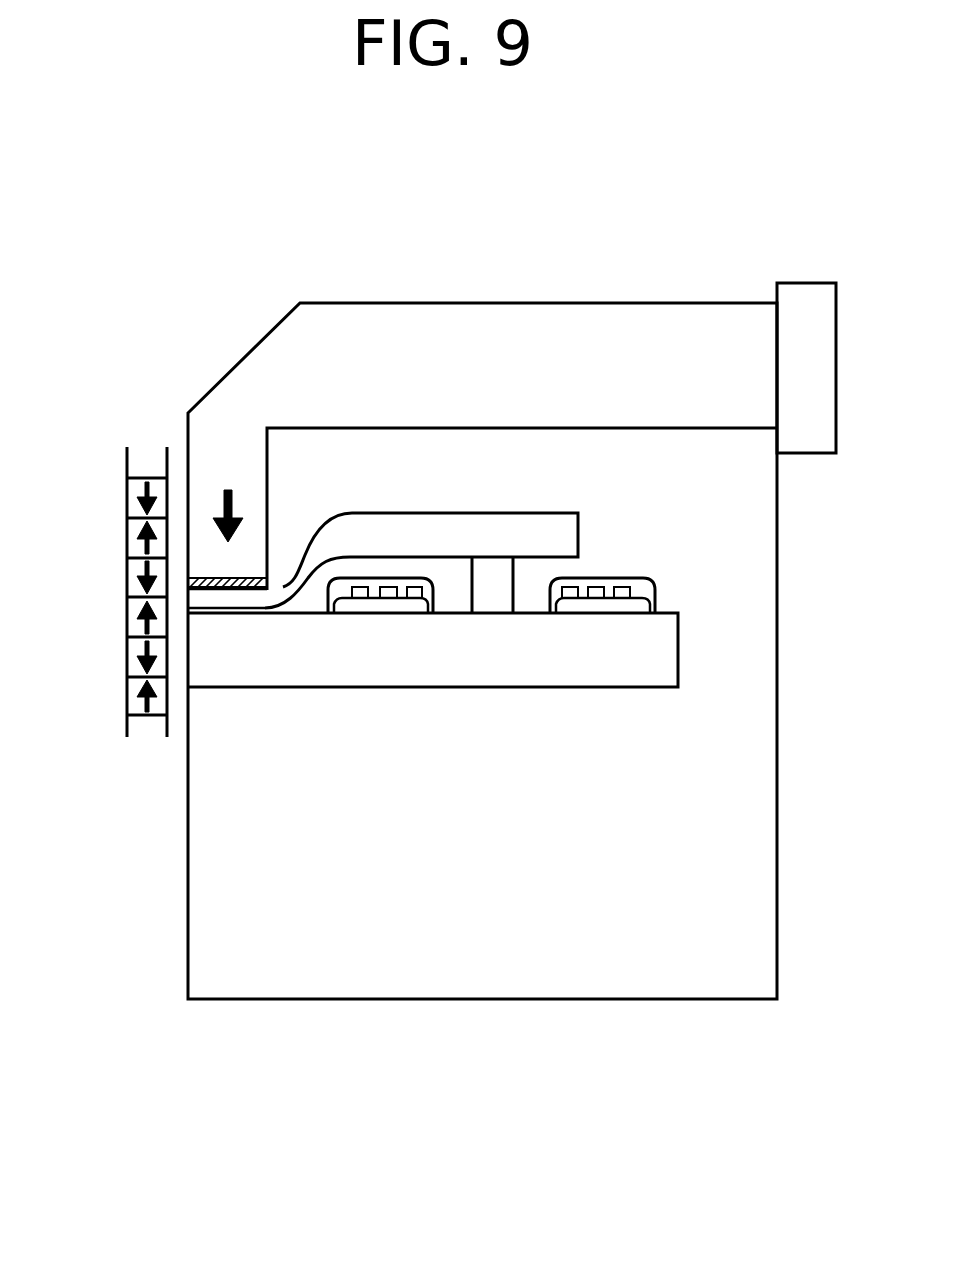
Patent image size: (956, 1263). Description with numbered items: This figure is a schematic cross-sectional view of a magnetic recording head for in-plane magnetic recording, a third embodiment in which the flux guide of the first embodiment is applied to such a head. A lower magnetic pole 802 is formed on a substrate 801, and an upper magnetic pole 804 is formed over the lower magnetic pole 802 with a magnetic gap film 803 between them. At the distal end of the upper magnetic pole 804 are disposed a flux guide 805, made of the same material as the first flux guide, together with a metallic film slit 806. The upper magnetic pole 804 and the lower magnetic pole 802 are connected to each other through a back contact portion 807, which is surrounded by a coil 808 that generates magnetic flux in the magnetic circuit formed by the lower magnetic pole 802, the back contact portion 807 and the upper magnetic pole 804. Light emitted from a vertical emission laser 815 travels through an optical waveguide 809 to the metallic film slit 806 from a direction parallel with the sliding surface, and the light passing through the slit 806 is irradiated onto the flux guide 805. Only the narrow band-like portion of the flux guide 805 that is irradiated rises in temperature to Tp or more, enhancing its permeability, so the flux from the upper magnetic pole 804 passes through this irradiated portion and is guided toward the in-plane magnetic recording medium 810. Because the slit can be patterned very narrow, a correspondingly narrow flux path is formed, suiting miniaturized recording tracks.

The substrate 801 is at (451, 937).
The lower magnetic pole 802 is at (203, 665).
The magnetic gap film 803 is at (208, 617).
The upper magnetic pole 804 is at (287, 595).
The flux guide 805 is at (253, 597).
The metallic film slit 806 is at (202, 578).
The back contact portion 807 is at (493, 598).
The coil 808 is at (410, 595).
The optical waveguide 809 is at (238, 398).
The in-plane magnetic recording medium 810 is at (137, 587).
The vertical emission laser 815 is at (800, 303).